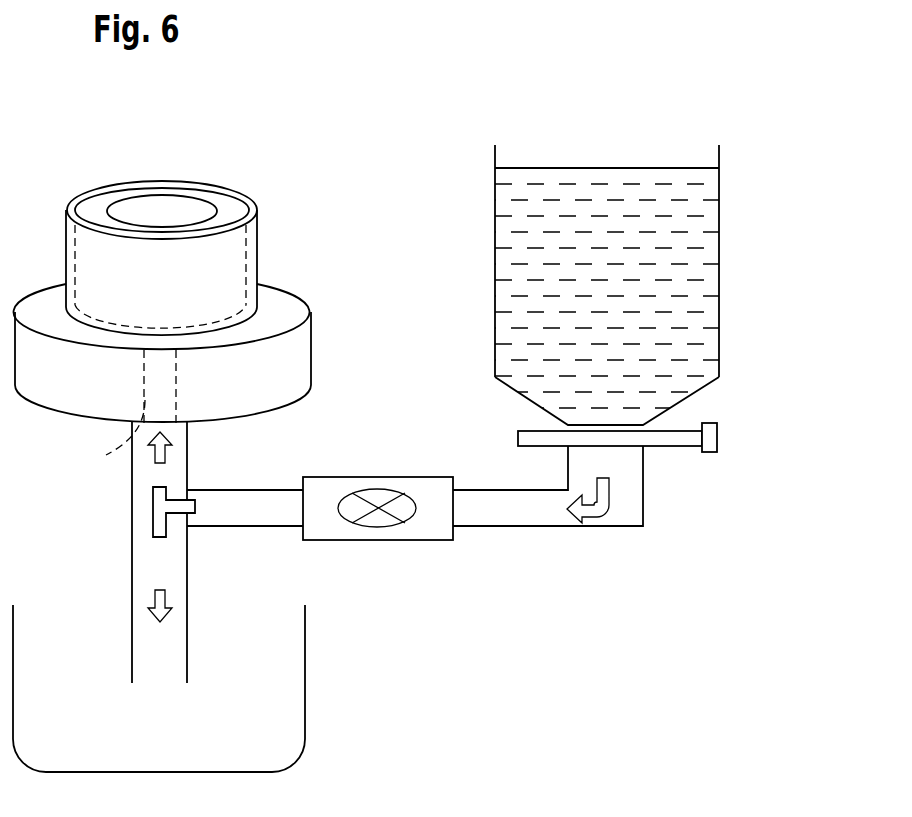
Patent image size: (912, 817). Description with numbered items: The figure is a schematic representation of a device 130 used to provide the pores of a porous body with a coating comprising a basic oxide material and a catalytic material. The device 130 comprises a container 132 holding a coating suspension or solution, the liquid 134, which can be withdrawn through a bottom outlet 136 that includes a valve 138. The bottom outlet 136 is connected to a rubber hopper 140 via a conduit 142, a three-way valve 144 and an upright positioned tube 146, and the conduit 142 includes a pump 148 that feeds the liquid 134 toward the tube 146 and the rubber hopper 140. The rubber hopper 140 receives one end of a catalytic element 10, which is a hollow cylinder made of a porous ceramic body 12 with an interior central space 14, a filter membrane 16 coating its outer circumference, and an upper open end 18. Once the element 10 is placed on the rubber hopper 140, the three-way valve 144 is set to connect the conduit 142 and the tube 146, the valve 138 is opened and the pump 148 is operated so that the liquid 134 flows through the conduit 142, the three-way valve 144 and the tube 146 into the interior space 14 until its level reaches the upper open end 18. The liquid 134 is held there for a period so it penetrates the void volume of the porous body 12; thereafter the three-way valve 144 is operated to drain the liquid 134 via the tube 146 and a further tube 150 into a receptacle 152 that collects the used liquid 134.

The catalytic element 10 is at (285, 230).
The porous ceramic body 12 is at (102, 202).
The interior central space 14 is at (169, 206).
The filter membrane 16 is at (73, 207).
The upper open end 18 is at (242, 183).
The device 130 is at (754, 111).
The container 132 is at (735, 261).
The liquid 134 is at (623, 296).
The bottom outlet 136 is at (511, 414).
The valve 138 is at (677, 440).
The rubber hopper 140 is at (287, 363).
The conduit 142 is at (523, 519).
The three-way valve 144 is at (153, 507).
The upright tube 146 is at (132, 460).
The pump 148 is at (427, 528).
The further tube 150 is at (132, 610).
The receptacle 152 is at (305, 667).